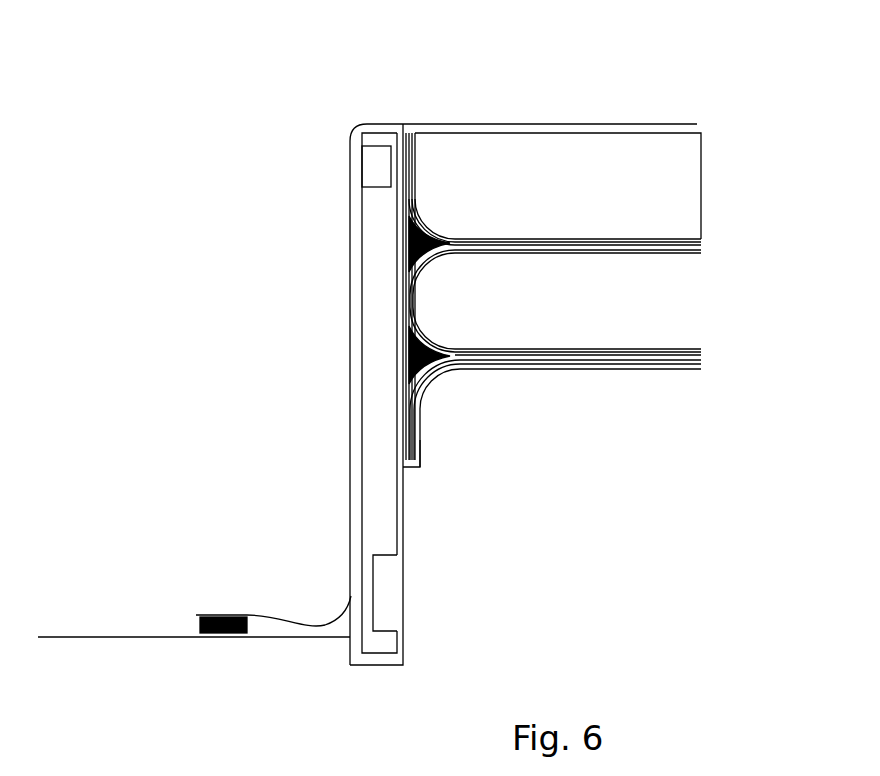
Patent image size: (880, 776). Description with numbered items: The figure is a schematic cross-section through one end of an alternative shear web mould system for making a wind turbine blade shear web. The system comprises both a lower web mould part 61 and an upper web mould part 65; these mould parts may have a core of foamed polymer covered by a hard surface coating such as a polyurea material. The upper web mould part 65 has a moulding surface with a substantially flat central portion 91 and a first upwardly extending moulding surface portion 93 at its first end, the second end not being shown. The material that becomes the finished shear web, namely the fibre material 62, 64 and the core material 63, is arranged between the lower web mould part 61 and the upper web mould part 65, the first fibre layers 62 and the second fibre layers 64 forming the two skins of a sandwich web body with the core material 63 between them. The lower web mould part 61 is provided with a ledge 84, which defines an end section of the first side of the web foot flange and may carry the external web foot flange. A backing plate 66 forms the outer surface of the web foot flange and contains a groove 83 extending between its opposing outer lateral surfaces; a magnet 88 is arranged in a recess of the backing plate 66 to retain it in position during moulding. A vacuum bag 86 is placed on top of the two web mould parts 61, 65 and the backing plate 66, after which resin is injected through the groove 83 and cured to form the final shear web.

The lower web mould part 61 is at (603, 368).
The first fibre layers 62 is at (472, 360).
The core material 63 is at (640, 317).
The second fibre layers 64 is at (481, 235).
The upper web mould part 65 is at (527, 187).
The backing plate 66 is at (378, 398).
The groove 83 is at (387, 601).
The ledge 84 is at (418, 467).
The vacuum bag 86 is at (345, 492).
The magnet 88 is at (378, 150).
The central portion 91 is at (593, 228).
The first upwardly extending moulding surface portion 93 is at (418, 165).